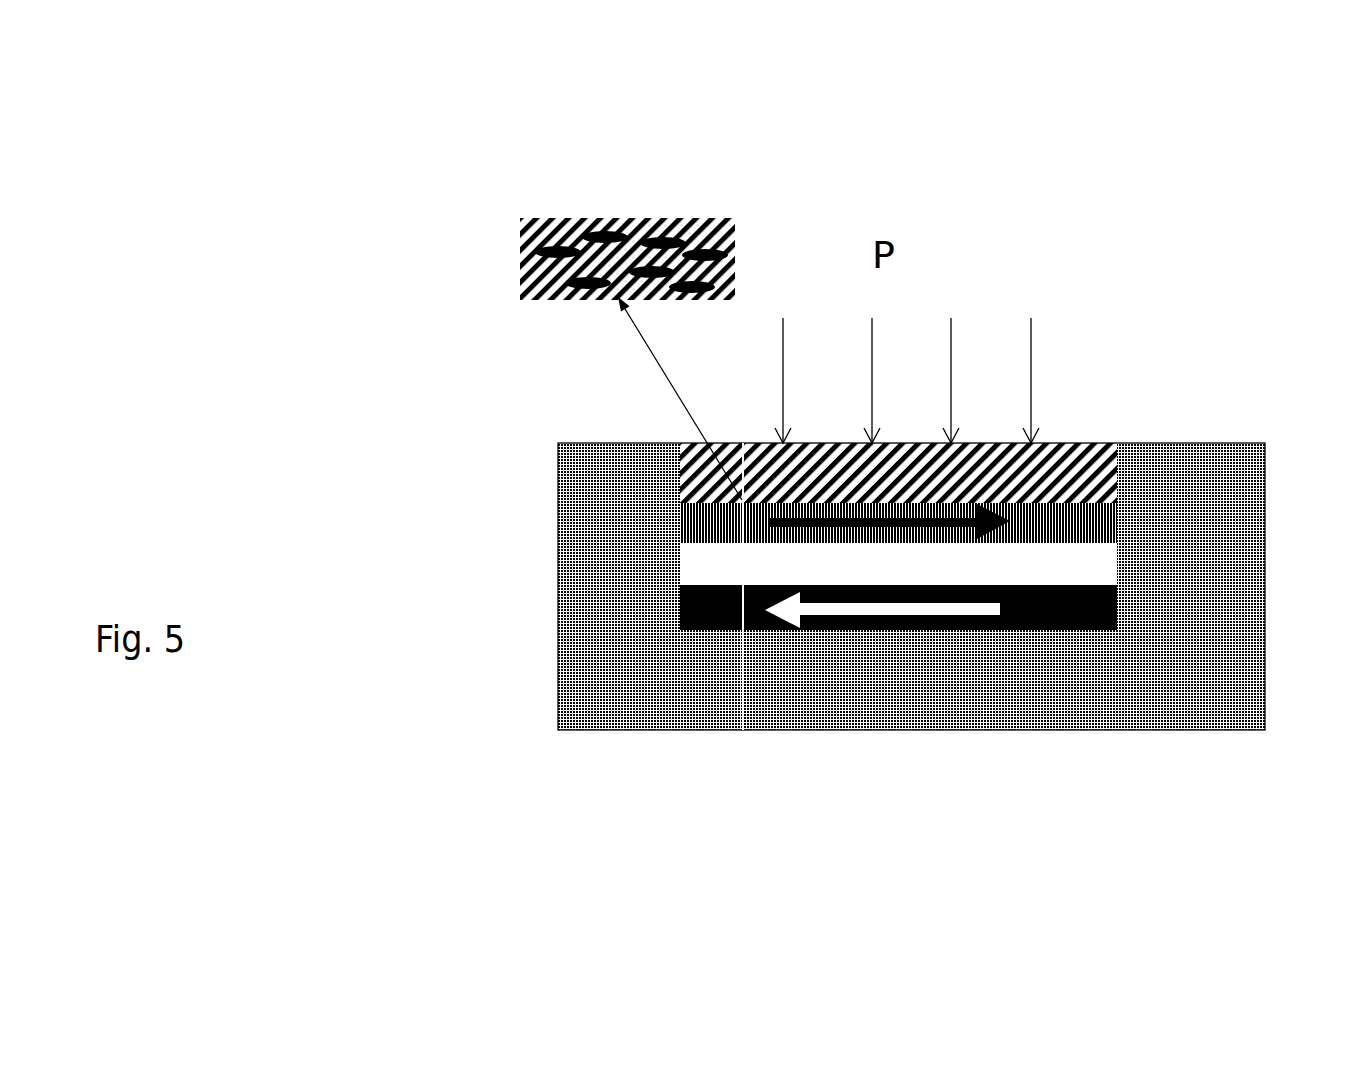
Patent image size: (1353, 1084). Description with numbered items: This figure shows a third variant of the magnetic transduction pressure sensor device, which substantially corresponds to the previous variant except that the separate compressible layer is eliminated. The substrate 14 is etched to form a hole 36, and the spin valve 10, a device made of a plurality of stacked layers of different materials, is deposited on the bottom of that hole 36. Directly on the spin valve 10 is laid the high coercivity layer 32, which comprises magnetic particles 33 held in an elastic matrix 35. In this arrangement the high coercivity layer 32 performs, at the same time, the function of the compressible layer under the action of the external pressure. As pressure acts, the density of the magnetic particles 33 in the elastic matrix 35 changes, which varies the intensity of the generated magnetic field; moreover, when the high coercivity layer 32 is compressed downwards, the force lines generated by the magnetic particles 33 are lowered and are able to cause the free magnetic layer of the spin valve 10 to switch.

The spin valve magnetic device 10 is at (1004, 573).
The substrate 14 is at (577, 692).
The high coercivity layer 32 is at (1113, 458).
The magnetic particles 33 is at (598, 225).
The elastic matrix 35 is at (592, 282).
The hole 36 is at (888, 636).